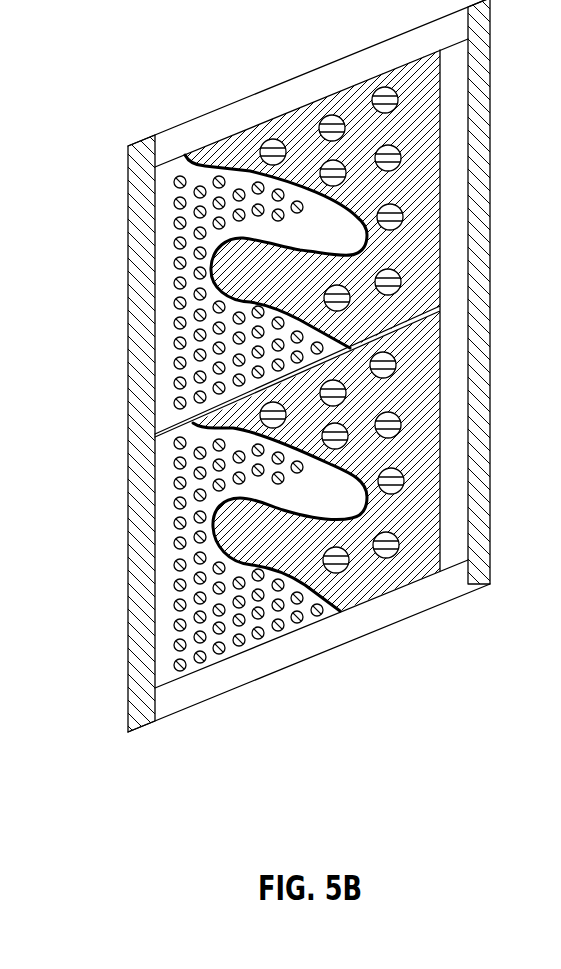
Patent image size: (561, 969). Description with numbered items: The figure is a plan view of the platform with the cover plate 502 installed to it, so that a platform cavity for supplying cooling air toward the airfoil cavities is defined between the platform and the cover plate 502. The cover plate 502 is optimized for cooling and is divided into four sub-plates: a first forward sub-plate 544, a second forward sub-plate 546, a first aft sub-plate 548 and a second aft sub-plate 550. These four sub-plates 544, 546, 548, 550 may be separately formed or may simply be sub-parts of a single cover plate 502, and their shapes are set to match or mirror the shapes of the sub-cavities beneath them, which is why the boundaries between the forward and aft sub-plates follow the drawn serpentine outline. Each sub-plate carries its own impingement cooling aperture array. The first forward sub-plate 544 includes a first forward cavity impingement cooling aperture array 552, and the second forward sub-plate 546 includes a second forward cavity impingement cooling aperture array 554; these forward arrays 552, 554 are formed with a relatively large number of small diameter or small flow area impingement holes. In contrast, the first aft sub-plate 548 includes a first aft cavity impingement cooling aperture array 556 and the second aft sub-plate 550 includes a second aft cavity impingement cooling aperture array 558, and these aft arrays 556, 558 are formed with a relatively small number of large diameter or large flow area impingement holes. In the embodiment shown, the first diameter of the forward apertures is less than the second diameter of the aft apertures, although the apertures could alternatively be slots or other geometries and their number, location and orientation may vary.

The cover plate 502 is at (298, 124).
The first forward sub-plate 544 is at (163, 672).
The second forward sub-plate 546 is at (182, 167).
The first aft sub-plate 548 is at (410, 392).
The second aft sub-plate 550 is at (413, 187).
The first forward cavity impingement cooling aperture array 552 is at (175, 512).
The second forward cavity impingement cooling aperture array 554 is at (175, 312).
The first aft cavity impingement cooling aperture array 556 is at (412, 545).
The second aft cavity impingement cooling aperture array 558 is at (405, 101).